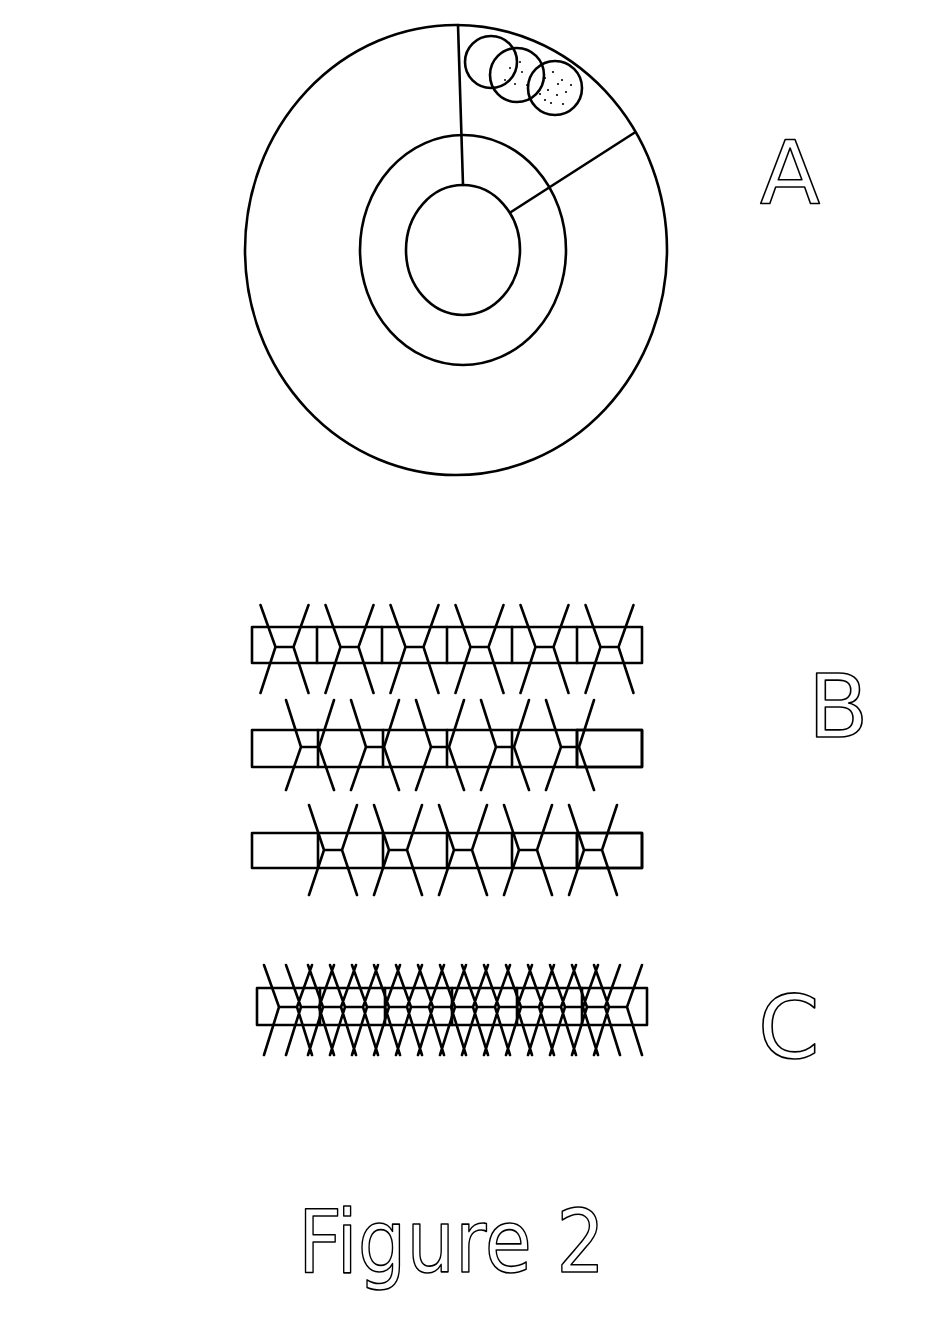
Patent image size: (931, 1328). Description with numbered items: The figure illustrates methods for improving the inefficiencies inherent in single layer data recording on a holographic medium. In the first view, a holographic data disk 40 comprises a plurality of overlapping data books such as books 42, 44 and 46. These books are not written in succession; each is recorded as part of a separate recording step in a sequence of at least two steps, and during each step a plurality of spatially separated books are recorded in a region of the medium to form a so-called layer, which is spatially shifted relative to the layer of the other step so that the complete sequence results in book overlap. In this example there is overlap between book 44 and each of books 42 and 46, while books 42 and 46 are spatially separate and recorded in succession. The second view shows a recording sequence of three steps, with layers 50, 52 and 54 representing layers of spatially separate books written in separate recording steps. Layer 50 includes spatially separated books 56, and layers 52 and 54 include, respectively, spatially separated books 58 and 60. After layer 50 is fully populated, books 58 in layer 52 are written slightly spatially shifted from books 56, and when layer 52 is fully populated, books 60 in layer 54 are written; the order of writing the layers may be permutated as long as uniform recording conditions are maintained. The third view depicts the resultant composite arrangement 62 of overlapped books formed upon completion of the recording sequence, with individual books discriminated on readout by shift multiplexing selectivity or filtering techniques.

In FIG. 2A, the holographic data disk 40 is at (290, 67).
In FIG. 2A, the data book 42 is at (497, 31).
In FIG. 2A, the data book 44 is at (545, 47).
In FIG. 2A, the data book 46 is at (580, 88).
In FIG. 2B, the layer 50 is at (252, 645).
In FIG. 2B, the layer 52 is at (252, 747).
In FIG. 2B, the layer 54 is at (252, 848).
In FIG. 2B, the spatially separated books 56 is at (625, 640).
In FIG. 2B, the spatially separated books 58 is at (607, 748).
In FIG. 2B, the spatially separated books 60 is at (627, 855).
In FIG. 2C, the combined superimposed strip 62 is at (185, 1008).